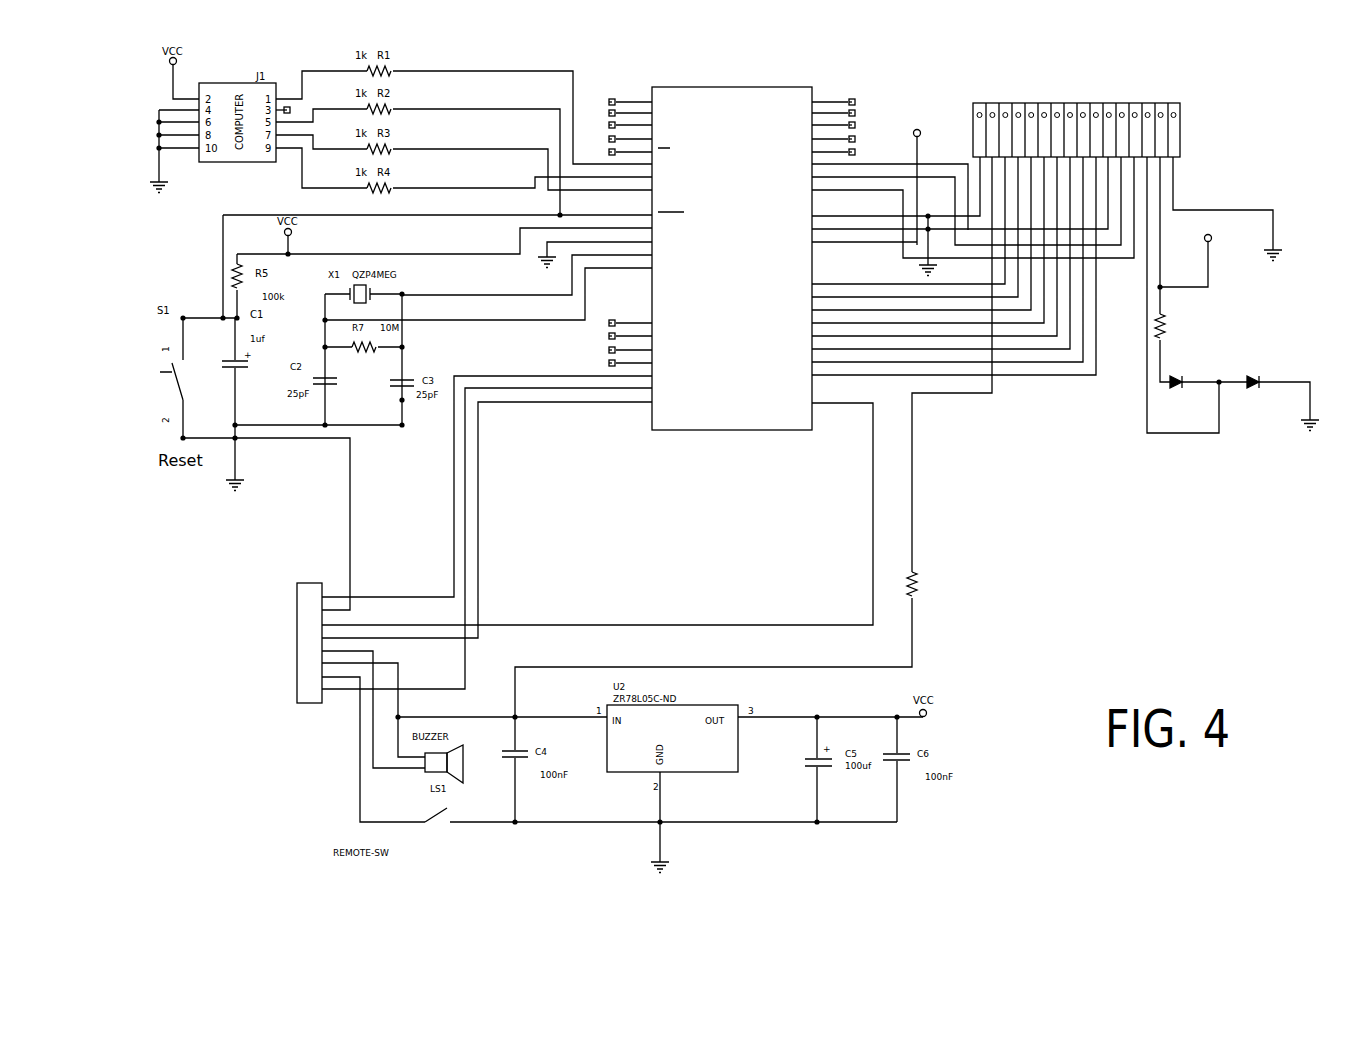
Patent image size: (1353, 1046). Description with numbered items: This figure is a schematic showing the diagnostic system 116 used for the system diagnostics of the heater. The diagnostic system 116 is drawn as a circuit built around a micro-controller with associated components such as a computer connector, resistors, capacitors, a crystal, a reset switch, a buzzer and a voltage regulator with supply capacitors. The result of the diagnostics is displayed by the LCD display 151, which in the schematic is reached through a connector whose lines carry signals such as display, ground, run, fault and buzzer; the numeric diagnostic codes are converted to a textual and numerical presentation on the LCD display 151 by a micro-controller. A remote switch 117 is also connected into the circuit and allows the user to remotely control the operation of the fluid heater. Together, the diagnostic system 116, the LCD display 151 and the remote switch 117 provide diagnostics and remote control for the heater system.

The diagnostic system 116 is at (1047, 532).
The LCD display 151 is at (295, 703).
The remote switch 117 is at (427, 822).